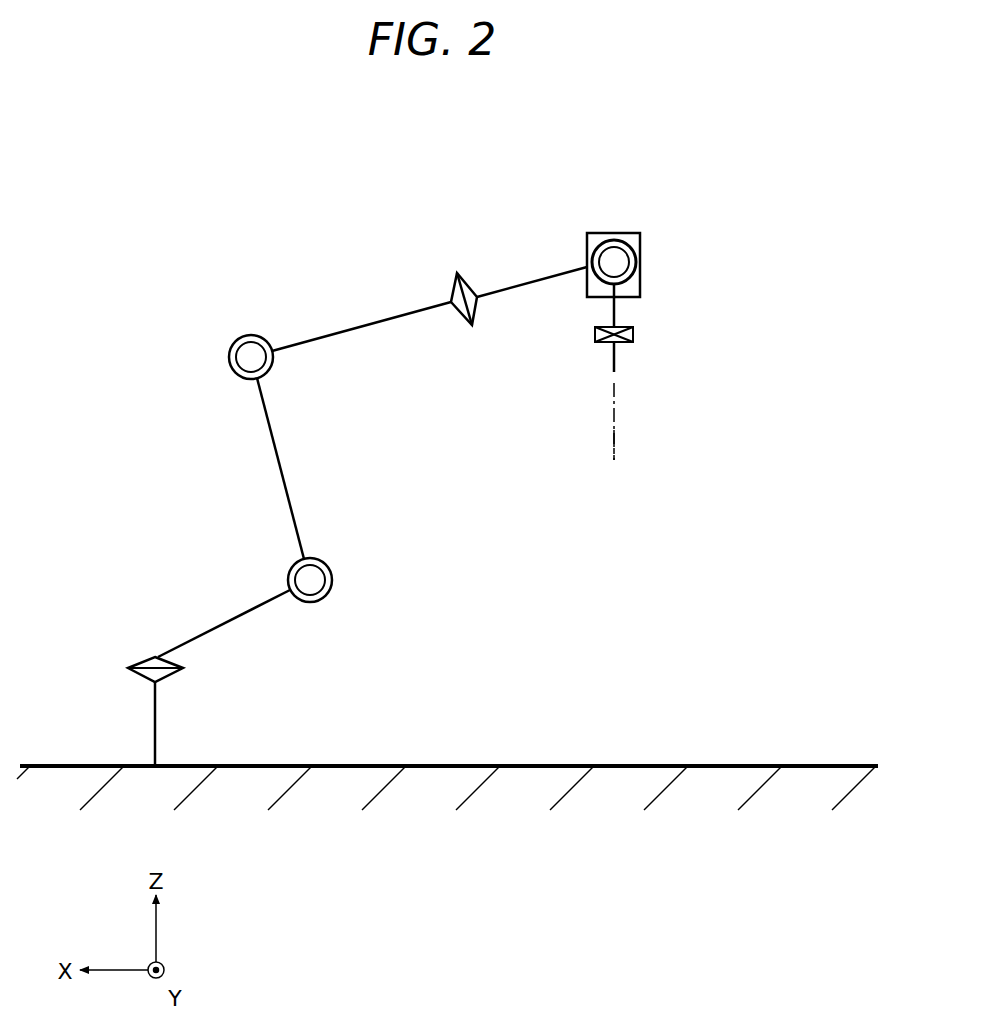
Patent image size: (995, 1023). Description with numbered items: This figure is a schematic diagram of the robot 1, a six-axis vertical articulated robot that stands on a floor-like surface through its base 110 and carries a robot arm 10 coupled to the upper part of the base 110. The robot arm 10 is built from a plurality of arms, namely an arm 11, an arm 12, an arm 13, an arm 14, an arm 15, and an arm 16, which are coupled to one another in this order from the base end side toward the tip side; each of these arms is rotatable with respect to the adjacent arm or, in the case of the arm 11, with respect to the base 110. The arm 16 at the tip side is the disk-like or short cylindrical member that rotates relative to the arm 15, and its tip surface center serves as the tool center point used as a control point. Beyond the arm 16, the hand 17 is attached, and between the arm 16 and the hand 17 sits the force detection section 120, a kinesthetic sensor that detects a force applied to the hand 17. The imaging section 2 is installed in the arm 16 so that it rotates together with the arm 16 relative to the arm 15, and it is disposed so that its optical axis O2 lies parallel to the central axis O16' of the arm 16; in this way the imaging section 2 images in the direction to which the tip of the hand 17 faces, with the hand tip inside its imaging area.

The robot 1 is at (170, 200).
The imaging section 2 is at (644, 265).
The robot arm 10 is at (308, 342).
The arm 11 is at (218, 625).
The arm 12 is at (278, 468).
The arm 13 is at (350, 328).
The arm 14 is at (470, 286).
The arm 15 is at (541, 278).
The arm 16 is at (611, 307).
The hand 17 is at (611, 357).
The base 110 is at (155, 713).
The force detection section 120 is at (634, 335).
The central axis of the arm 16 O16' is at (559, 421).
The optical axis O2 is at (611, 447).